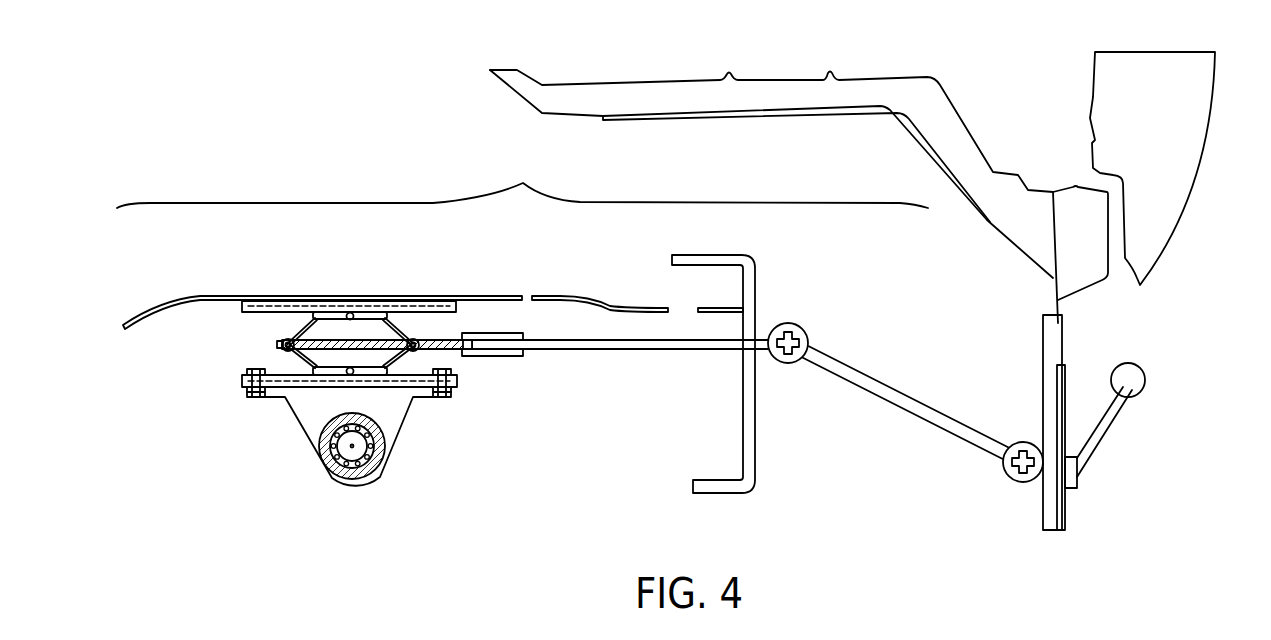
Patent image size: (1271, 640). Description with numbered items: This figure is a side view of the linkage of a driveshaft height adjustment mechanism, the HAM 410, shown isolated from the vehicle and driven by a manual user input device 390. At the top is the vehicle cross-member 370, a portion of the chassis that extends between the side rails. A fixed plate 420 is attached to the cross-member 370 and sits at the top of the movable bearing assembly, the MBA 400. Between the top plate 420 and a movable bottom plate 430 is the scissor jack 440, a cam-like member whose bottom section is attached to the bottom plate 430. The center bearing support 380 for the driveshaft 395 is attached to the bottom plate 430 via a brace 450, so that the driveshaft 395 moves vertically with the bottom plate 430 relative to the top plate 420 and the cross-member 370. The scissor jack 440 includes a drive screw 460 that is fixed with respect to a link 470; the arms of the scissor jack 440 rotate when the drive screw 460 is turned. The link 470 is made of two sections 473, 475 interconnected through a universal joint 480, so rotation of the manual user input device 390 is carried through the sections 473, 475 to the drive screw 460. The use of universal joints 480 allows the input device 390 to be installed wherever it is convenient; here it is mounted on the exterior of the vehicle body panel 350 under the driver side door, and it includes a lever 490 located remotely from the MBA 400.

The vehicle body panel 350 is at (1153, 116).
The cross-member 370 is at (490, 297).
The center bearing support 380 is at (355, 487).
The manual user input device 390 is at (1150, 370).
The driveshaft 395 is at (348, 446).
The MBA 400 is at (193, 310).
The HAM 410 is at (522, 183).
The plate 420 is at (383, 308).
The bottom plate 430 is at (458, 388).
The scissor jack 440 is at (277, 315).
The brace 450 is at (300, 416).
The drive screw 460 is at (458, 346).
The link 470 is at (712, 352).
The section of link 473 is at (880, 375).
The section of link 475 is at (677, 336).
The universal joint 480 is at (793, 322).
The lever 490 is at (1130, 395).